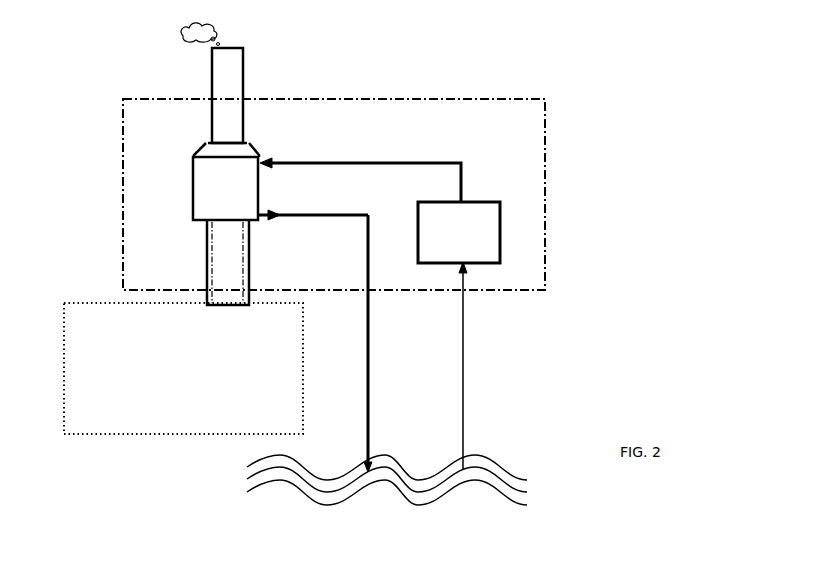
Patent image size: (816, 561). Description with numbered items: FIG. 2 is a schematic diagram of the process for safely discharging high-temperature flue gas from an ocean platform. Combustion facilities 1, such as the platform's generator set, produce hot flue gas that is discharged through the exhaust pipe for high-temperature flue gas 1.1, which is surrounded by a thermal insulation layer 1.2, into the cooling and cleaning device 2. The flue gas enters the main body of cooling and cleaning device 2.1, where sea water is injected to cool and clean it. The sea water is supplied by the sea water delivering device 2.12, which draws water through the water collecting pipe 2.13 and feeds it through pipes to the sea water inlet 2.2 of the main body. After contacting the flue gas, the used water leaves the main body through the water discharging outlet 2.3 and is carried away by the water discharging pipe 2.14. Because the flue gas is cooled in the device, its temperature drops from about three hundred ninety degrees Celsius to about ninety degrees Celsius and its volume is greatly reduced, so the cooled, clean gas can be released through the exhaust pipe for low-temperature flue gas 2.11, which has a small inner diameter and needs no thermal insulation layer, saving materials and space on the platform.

The combustion facilities 1 is at (102, 312).
The exhaust pipe for high-temperature flue gas 1.1 is at (230, 280).
The thermal insulation layer 1.2 is at (210, 285).
The cooling and cleaning device 2 is at (393, 113).
The main body of cooling and cleaning device 2.1 is at (205, 192).
The exhaust pipe for low-temperature flue gas 2.11 is at (222, 123).
The sea water delivering device 2.12 is at (450, 232).
The water collecting pipe 2.13 is at (463, 415).
The water discharging pipe 2.14 is at (370, 380).
The sea water inlet 2.2 is at (264, 162).
The water discharging outlet 2.3 is at (327, 201).